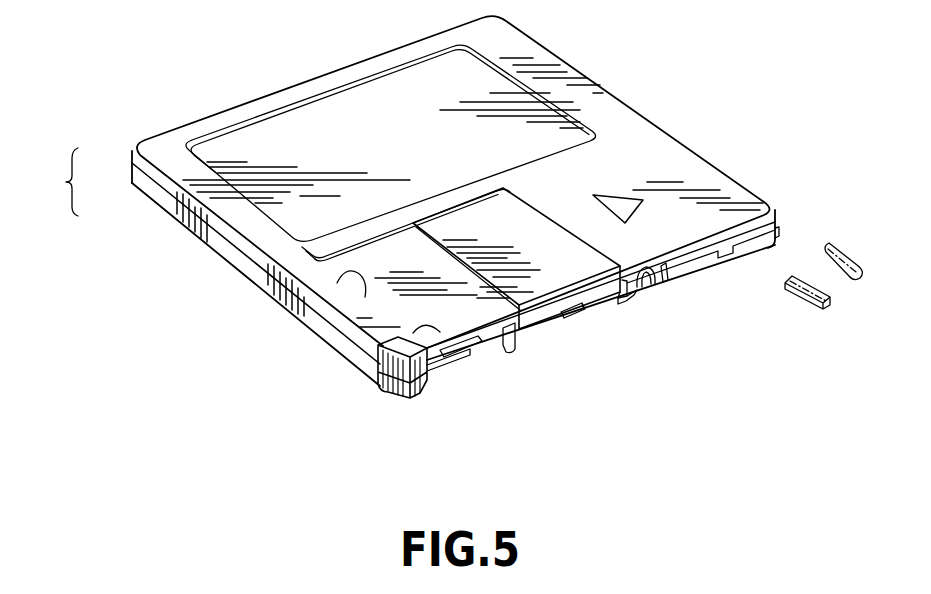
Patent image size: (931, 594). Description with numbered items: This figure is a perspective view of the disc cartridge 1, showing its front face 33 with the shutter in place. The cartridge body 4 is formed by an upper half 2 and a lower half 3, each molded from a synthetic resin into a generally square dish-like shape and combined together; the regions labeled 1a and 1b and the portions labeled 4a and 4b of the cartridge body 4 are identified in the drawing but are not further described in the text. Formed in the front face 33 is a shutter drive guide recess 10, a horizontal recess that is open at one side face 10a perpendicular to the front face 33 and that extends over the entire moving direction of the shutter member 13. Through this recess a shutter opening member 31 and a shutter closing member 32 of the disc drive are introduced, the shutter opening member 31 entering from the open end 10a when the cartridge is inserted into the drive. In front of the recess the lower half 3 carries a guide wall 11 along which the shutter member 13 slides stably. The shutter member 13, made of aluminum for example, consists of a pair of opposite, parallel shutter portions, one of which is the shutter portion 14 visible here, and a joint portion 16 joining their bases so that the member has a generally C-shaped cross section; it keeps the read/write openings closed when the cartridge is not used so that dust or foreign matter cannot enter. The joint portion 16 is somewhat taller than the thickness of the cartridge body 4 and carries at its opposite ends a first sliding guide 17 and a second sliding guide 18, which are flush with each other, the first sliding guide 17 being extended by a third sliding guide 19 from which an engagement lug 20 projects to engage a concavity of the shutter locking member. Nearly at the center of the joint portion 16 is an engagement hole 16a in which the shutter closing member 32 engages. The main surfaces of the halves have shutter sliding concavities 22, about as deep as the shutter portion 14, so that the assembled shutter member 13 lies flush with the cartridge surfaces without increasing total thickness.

The disc cartridge 1 is at (236, 283).
The top surface right portion 1a is at (742, 192).
The top surface left portion 1b is at (167, 132).
The upper half 2 is at (130, 158).
The lower half 3 is at (130, 180).
The cartridge body 4 is at (62, 207).
The notch 4a is at (375, 365).
The front edge portion 4b is at (432, 380).
The shutter drive guide recess 10 is at (725, 263).
The side face of the shutter drive guide recess 10a is at (777, 227).
The guide wall 11 is at (472, 353).
The shutter member 13 is at (603, 306).
The shutter portion 14 is at (527, 207).
The joint portion 16 is at (545, 338).
The engagement hole 16a is at (572, 316).
The first sliding guide 17 is at (643, 280).
The second sliding guide 18 is at (501, 328).
The third sliding guide 19 is at (634, 297).
The engagement lug 20 is at (677, 282).
The shutter sliding concavity 22 is at (360, 290).
The shutter opening member 31 is at (860, 278).
The shutter closing member 32 is at (813, 308).
The front face 33 is at (403, 382).